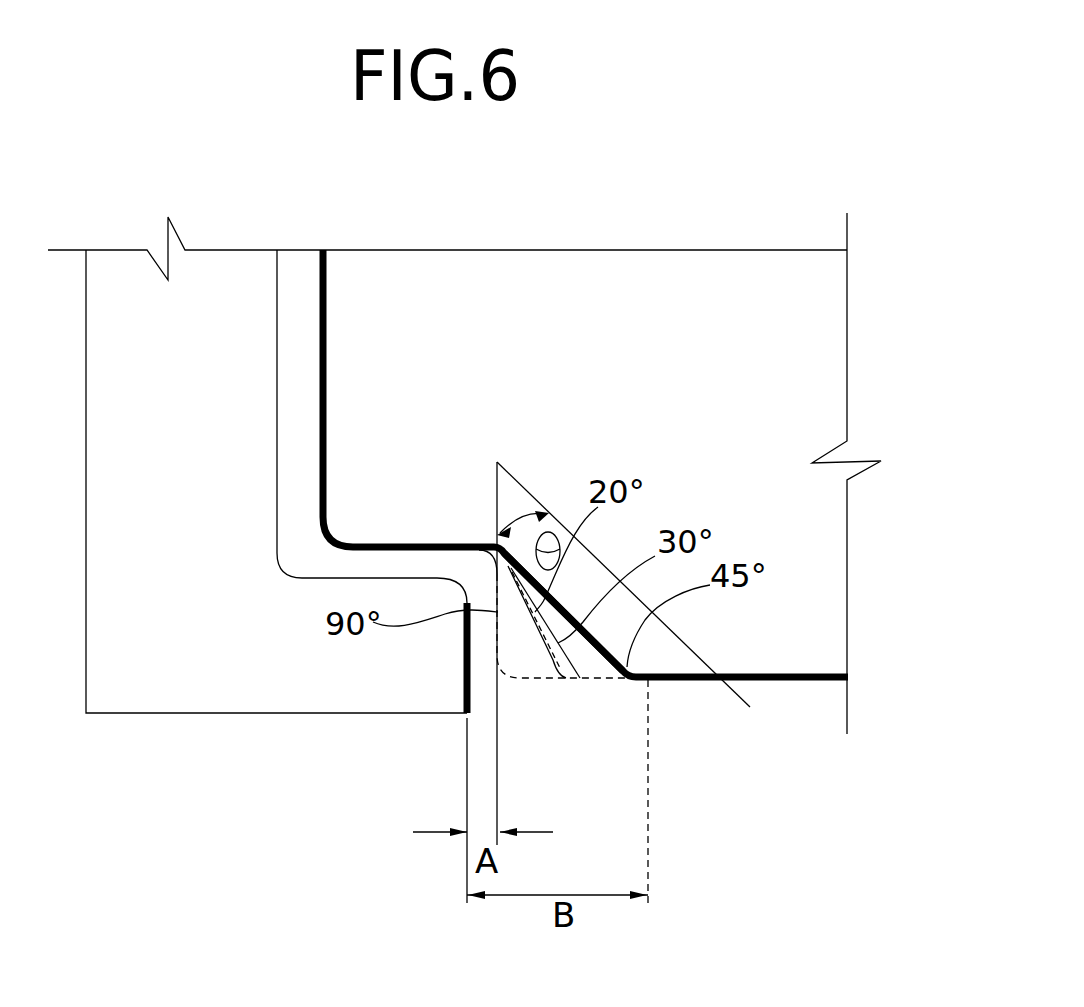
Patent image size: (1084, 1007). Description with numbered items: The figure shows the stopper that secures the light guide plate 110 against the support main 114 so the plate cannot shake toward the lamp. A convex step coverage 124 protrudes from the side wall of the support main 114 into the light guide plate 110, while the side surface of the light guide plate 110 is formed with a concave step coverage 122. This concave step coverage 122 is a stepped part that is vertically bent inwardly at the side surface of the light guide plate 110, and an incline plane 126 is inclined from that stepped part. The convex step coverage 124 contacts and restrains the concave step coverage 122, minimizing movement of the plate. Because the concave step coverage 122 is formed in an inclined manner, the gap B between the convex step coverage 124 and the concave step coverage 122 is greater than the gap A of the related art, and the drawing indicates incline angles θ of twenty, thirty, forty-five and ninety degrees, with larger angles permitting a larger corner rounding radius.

The light guide plate 110 is at (787, 681).
The support main 114 is at (113, 702).
The concave step coverage 122 is at (478, 505).
The convex step coverage 124 is at (415, 700).
The incline plane 126 is at (600, 643).